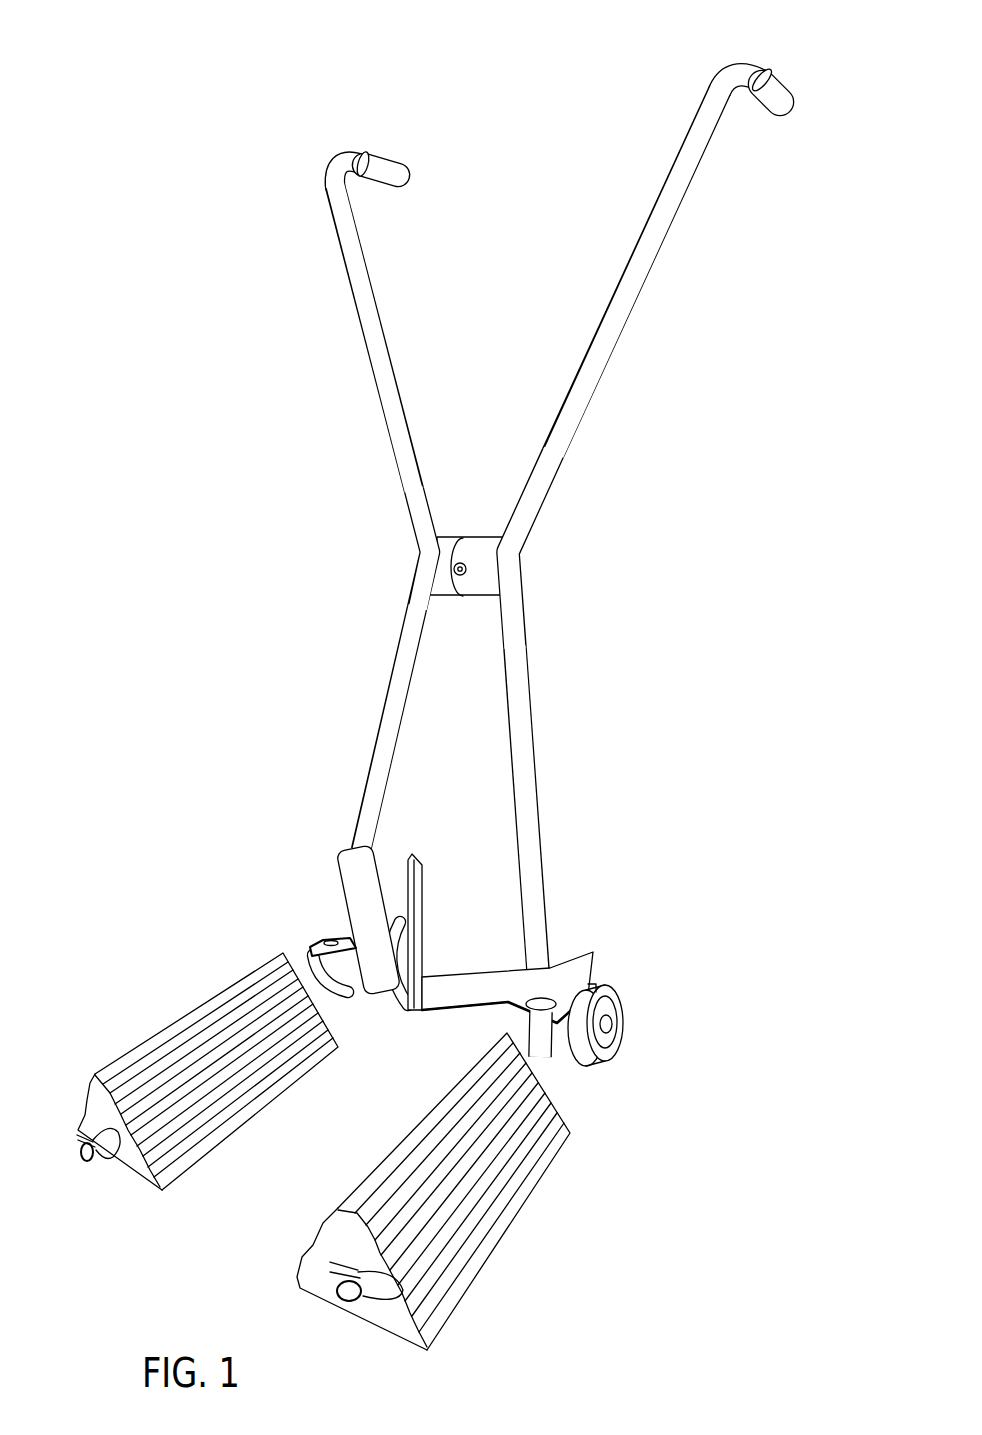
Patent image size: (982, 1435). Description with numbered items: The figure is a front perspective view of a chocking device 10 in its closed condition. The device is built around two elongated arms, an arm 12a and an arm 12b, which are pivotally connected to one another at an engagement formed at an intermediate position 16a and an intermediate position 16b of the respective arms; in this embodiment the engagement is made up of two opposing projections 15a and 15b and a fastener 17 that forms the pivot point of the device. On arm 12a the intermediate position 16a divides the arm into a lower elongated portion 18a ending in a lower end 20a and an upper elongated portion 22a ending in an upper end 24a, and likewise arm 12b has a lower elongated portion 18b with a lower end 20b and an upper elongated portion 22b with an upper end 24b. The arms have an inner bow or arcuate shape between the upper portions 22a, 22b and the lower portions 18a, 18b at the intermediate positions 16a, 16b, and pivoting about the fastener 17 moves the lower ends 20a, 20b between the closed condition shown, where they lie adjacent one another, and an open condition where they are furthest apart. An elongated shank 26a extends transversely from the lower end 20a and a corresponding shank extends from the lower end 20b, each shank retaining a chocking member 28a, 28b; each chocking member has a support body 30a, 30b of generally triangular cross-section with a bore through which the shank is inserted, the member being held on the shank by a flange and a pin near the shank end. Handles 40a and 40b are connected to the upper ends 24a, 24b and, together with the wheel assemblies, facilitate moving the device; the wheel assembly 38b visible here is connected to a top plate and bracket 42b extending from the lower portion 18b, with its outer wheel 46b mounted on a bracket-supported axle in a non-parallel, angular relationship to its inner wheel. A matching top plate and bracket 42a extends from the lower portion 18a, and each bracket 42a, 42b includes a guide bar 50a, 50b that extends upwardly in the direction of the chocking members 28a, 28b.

The chocking device 10 is at (146, 147).
The arm 12a is at (346, 477).
The arm 12b is at (658, 511).
The opposing projection 15a is at (448, 538).
The opposing projection 15b is at (487, 592).
The intermediate position 16a is at (425, 557).
The intermediate position 16b is at (517, 552).
The fastener 17 is at (455, 572).
The lower elongated portion 18a is at (398, 704).
The lower elongated portion 18b is at (530, 712).
The lower end 20a is at (325, 990).
The lower end 20b is at (543, 1053).
The upper elongated portion 22a is at (377, 360).
The upper elongated portion 22b is at (625, 298).
The upper end 24a is at (338, 158).
The upper end 24b is at (742, 66).
The elongated shank 26a is at (93, 1160).
The chocking member 28a is at (243, 1080).
The chocking member 28b is at (503, 1167).
The support body 30a is at (225, 1071).
The support body 30b is at (460, 1191).
The wheel assembly 38b is at (627, 1022).
The handle 40a is at (388, 160).
The handle 40b is at (776, 85).
The top plate and bracket 42a is at (323, 938).
The top plate and bracket 42b is at (573, 953).
The outer wheel 46b is at (598, 987).
The guide bar 50a is at (347, 870).
The guide bar 50b is at (417, 863).